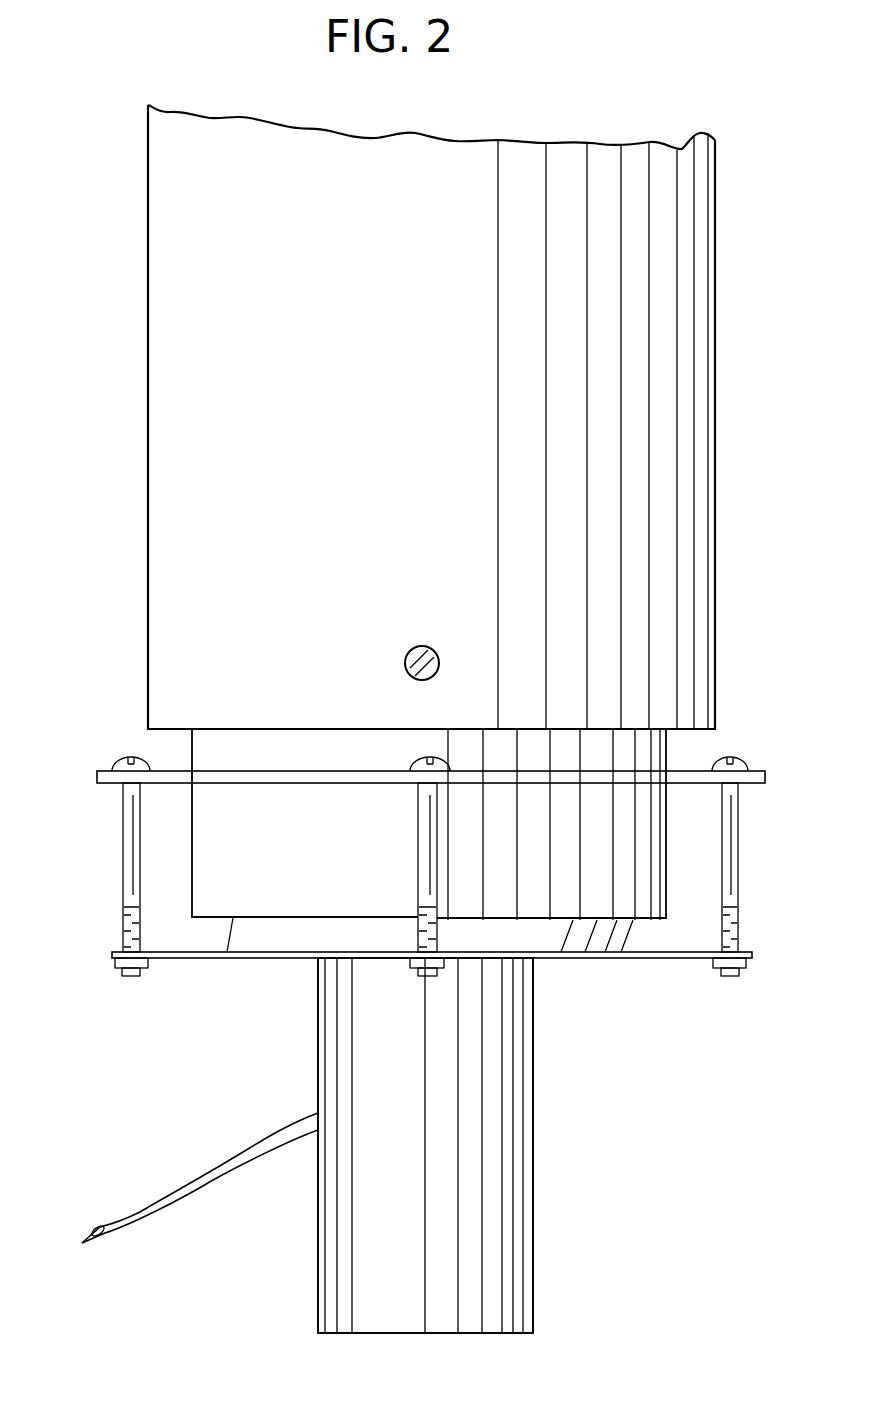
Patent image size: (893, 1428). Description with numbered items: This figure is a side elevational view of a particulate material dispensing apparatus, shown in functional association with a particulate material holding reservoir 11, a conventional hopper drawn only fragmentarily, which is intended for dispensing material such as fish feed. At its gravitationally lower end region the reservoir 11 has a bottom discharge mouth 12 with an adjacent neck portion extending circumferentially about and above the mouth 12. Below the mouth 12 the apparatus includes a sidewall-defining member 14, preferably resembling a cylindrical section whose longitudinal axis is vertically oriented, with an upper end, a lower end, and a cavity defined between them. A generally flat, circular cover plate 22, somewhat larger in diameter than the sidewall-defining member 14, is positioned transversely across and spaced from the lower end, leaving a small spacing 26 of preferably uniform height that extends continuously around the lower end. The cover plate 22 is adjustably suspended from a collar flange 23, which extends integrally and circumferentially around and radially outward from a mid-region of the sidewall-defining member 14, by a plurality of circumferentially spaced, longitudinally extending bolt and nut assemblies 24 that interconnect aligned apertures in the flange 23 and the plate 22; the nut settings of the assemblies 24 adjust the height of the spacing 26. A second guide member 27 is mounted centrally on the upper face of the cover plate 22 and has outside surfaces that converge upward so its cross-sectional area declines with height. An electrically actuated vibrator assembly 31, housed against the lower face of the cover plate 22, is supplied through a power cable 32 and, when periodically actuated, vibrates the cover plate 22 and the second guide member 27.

The particulate material holding reservoir 11 is at (487, 282).
The bottom discharge mouth 12 is at (718, 517).
The sidewall-defining member 14 is at (203, 752).
The cover plate 22 is at (177, 957).
The collar flange 23 is at (98, 783).
The bolt and nut assemblies 24 is at (128, 829).
The small spacing 26 is at (205, 924).
The second guide member 27 is at (301, 935).
The vibrator assembly 31 is at (497, 1133).
The power cable 32 is at (227, 1157).